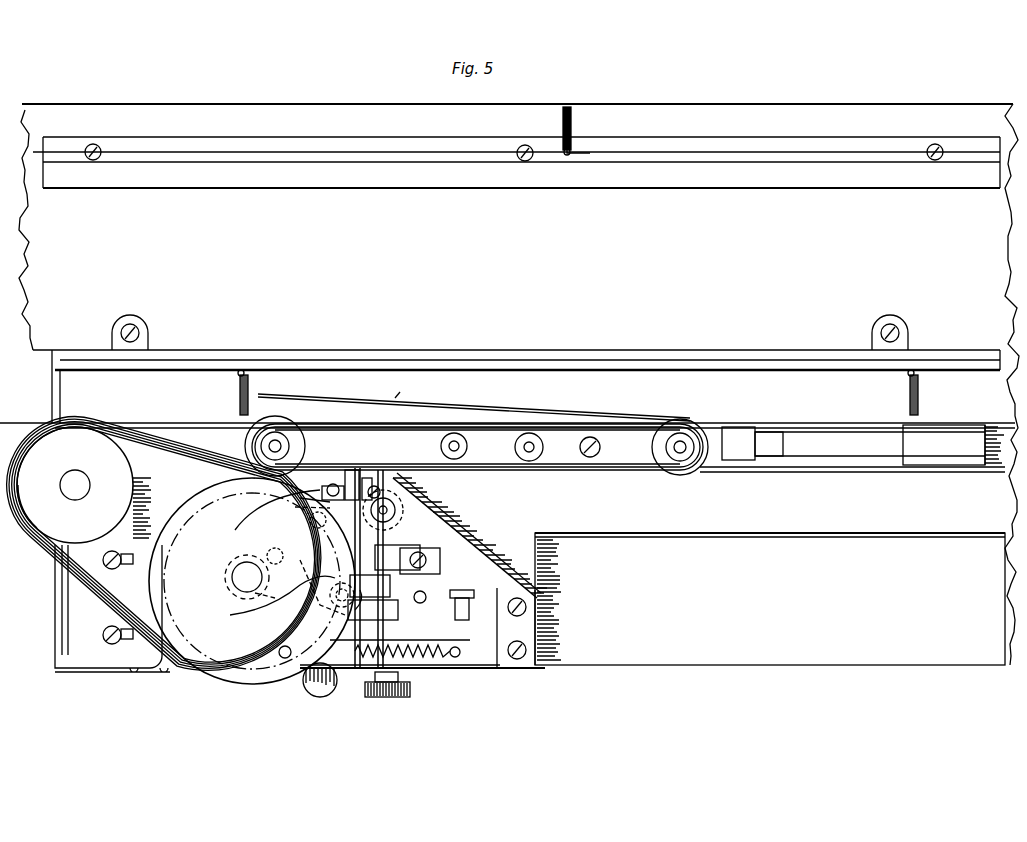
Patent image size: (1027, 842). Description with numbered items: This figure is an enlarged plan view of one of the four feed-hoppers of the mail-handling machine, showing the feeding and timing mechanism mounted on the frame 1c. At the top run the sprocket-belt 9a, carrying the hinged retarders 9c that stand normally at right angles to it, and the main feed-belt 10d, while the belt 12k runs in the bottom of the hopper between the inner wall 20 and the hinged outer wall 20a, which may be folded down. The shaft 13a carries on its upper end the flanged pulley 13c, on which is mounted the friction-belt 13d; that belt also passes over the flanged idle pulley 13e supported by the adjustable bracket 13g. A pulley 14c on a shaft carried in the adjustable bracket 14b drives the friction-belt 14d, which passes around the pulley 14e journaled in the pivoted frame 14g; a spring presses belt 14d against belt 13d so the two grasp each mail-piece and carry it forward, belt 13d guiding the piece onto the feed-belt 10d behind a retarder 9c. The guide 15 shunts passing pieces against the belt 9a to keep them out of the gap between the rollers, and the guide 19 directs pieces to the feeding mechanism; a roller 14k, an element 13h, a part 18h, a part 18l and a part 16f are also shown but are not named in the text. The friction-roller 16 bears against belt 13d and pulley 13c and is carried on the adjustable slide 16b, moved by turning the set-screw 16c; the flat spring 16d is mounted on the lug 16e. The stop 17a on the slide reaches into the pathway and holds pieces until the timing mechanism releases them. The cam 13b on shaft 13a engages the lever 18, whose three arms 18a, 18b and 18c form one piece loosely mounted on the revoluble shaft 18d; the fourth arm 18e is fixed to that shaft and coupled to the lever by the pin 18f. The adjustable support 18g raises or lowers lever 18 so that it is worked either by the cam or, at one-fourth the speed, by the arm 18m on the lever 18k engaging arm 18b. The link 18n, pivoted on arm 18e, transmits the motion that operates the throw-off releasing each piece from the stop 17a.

The sprocket-belt 9a is at (410, 160).
The retarder 9c is at (577, 137).
The feed-belt 10d is at (72, 392).
The guide 15 is at (535, 406).
The friction-belt 14d is at (503, 471).
The pulley 14e is at (261, 446).
The bracket 14b is at (278, 438).
The pulley 14c is at (686, 472).
The belt roller 14k is at (456, 440).
The frame 14g is at (395, 394).
The inner wall of the hopper 20 is at (838, 470).
The outer wall of the hopper 20a is at (722, 538).
The belt 12k is at (990, 500).
The frame 1c is at (490, 668).
The guide 19 is at (536, 596).
The adjustable bracket 13g is at (88, 660).
The cam 13b is at (70, 485).
The flanged idle pulley 13e is at (50, 505).
The flanged pulley 13c is at (217, 678).
The shaft 13a is at (240, 573).
The hub pin 13h is at (262, 592).
The friction-belt 13d is at (165, 450).
The pin 18f is at (274, 606).
The arm 18a is at (303, 603).
The arm 18e is at (262, 515).
The link 18n is at (292, 507).
The arm 18c is at (300, 498).
The lever 18k is at (312, 526).
The revoluble shaft 18d is at (297, 555).
The arm 18b is at (345, 580).
The lever 18 is at (352, 688).
The stop 18h is at (330, 486).
The adjustable support 18g is at (352, 478).
The stop 17a is at (371, 478).
The arm 18m is at (455, 605).
The spring 18l is at (407, 651).
The friction-roller 16 is at (397, 512).
The pivot disc 16f is at (395, 510).
The flat spring 16d is at (415, 560).
The lug 16e is at (428, 560).
The adjustable slide 16b is at (438, 572).
The set-screw 16c is at (408, 698).